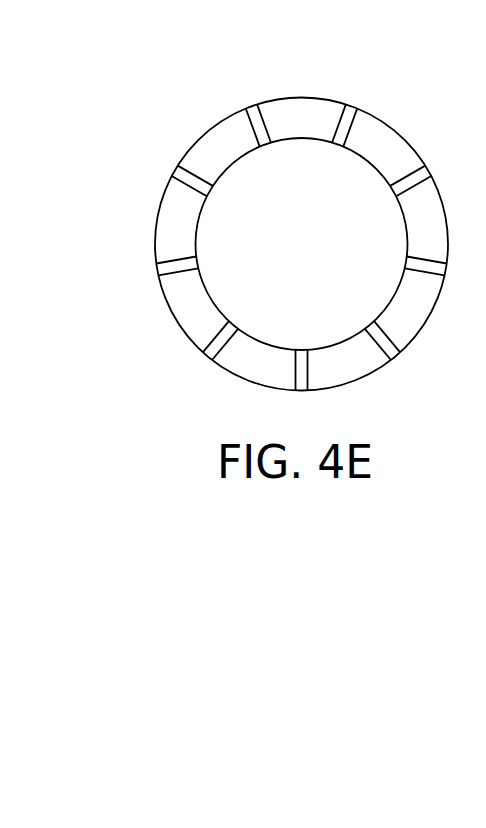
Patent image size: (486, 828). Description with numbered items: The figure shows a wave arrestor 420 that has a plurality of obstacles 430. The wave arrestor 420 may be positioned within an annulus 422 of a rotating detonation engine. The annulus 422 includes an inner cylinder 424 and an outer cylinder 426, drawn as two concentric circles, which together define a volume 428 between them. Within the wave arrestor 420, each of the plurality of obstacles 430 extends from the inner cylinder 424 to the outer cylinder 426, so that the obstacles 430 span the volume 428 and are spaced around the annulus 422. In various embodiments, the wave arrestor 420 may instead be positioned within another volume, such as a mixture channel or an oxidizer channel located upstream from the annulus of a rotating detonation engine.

The wave arrestor 420 is at (151, 250).
The annulus 422 is at (191, 144).
The inner cylinder 424 is at (250, 150).
The outer cylinder 426 is at (272, 100).
The volume 428 is at (230, 127).
The obstacles 430 is at (182, 274).